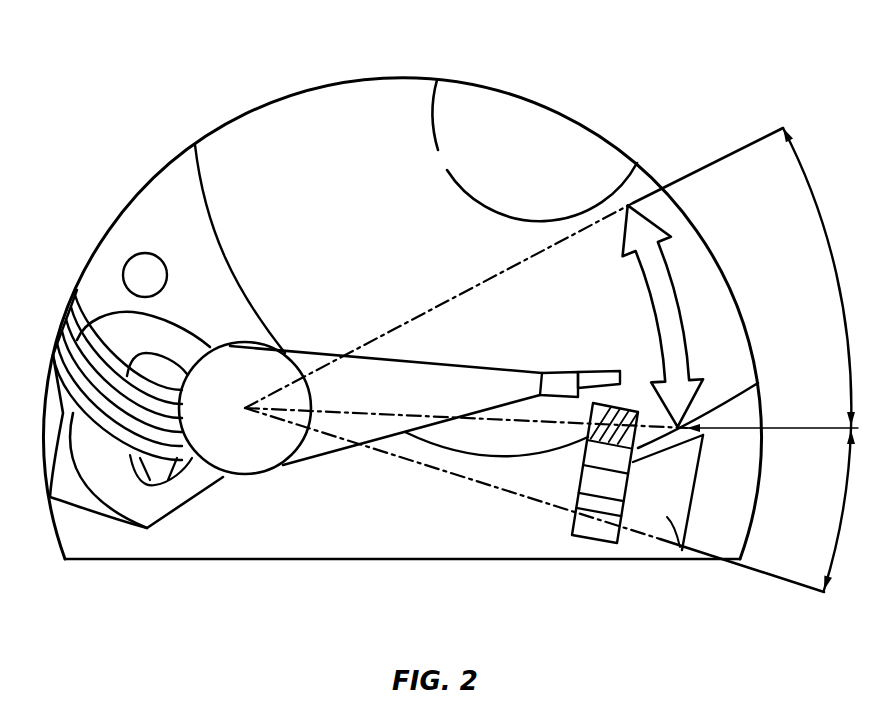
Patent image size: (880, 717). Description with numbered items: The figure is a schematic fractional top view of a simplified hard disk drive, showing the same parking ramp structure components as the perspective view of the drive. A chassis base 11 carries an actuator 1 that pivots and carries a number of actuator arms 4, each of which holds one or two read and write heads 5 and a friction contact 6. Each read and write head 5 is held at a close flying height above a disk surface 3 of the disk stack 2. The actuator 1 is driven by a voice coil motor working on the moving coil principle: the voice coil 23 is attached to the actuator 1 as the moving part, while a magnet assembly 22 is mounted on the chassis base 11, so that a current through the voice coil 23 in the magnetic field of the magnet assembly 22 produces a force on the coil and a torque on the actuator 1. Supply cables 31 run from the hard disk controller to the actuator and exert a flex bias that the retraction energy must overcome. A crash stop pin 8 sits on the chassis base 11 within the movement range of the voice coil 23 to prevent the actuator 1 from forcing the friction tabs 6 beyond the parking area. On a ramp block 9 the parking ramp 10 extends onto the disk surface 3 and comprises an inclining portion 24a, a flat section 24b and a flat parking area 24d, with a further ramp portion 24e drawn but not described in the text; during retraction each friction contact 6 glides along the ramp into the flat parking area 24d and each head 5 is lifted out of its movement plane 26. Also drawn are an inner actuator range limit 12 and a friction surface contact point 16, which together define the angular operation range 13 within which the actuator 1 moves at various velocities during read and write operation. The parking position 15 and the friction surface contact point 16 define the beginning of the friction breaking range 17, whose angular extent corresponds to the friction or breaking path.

The actuator 1 is at (222, 342).
The disk stack 2 is at (478, 128).
The disk surface 3 is at (283, 123).
The actuator arms 4 is at (360, 380).
The read and write head 5 is at (566, 372).
The friction contact 6 is at (624, 363).
The crash stop pin 8 is at (145, 275).
The ramp block 9 is at (688, 520).
The parking ramp 10 is at (573, 537).
The chassis base 11 is at (200, 540).
The inner actuator range limit 12 is at (500, 273).
The angular operation range 13 is at (827, 278).
The parking position 15 is at (402, 460).
The friction surface contact point 16 is at (497, 420).
The friction breaking range 17 is at (849, 509).
The magnet assembly 22 is at (97, 483).
The voice coil 23 is at (117, 333).
The inclining portion 24a is at (587, 450).
The flat section 24b is at (627, 487).
The flat parking area 24d is at (598, 530).
The wedge stop 24e is at (625, 513).
The movement plane 26 is at (686, 222).
The supply cables 31 is at (50, 350).